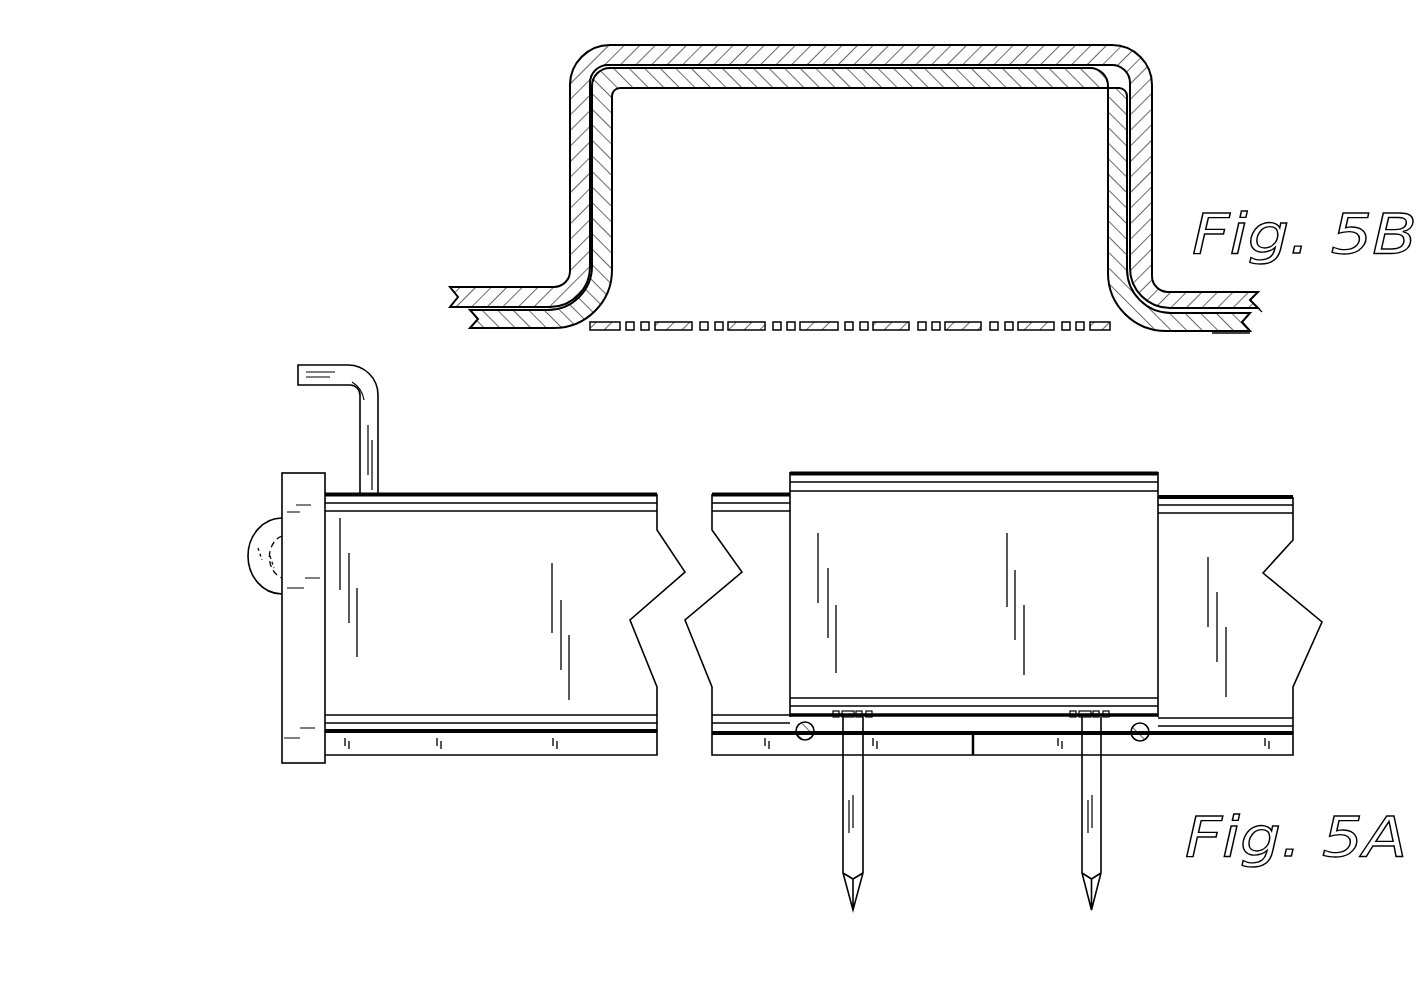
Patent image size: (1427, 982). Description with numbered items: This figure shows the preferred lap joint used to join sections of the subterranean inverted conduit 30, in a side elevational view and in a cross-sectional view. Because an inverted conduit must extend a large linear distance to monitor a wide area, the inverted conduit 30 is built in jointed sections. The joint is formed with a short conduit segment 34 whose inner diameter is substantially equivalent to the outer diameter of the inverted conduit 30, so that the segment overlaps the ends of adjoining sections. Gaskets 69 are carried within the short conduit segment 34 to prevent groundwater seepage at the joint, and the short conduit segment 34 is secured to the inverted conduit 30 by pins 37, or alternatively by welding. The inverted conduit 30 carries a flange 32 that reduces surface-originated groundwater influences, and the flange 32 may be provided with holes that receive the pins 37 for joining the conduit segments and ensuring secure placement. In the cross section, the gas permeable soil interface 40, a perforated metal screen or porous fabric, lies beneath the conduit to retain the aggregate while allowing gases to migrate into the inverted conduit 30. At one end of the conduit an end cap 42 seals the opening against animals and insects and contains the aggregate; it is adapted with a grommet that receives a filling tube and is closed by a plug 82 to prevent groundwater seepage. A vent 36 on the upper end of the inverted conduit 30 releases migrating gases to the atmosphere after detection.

In FIG. 5B, the inverted conduit 30 is at (1108, 242).
In FIG. 5A, the inverted conduit 30 is at (545, 548).
In FIG. 5B, the flange 32 is at (1217, 333).
In FIG. 5B, the short conduit segment 34 is at (1152, 157).
In FIG. 5A, the short conduit segment 34 is at (907, 517).
In FIG. 5A, the vent 36 is at (368, 408).
In FIG. 5A, the pins 37 is at (855, 857).
In FIG. 5B, the gas permeable soil interface 40 is at (893, 326).
In FIG. 5A, the end cap 42 is at (308, 710).
In FIG. 5B, the gaskets 69 is at (1262, 315).
In FIG. 5A, the gaskets 69 is at (803, 741).
In FIG. 5A, the plug 82 is at (252, 562).